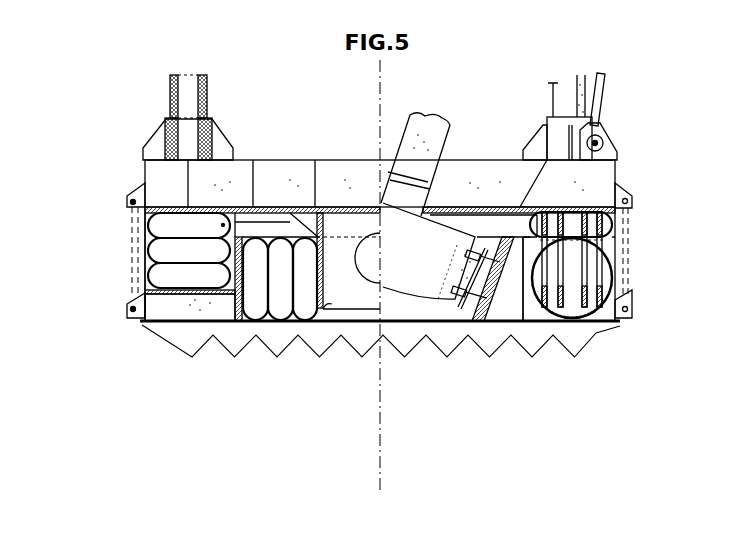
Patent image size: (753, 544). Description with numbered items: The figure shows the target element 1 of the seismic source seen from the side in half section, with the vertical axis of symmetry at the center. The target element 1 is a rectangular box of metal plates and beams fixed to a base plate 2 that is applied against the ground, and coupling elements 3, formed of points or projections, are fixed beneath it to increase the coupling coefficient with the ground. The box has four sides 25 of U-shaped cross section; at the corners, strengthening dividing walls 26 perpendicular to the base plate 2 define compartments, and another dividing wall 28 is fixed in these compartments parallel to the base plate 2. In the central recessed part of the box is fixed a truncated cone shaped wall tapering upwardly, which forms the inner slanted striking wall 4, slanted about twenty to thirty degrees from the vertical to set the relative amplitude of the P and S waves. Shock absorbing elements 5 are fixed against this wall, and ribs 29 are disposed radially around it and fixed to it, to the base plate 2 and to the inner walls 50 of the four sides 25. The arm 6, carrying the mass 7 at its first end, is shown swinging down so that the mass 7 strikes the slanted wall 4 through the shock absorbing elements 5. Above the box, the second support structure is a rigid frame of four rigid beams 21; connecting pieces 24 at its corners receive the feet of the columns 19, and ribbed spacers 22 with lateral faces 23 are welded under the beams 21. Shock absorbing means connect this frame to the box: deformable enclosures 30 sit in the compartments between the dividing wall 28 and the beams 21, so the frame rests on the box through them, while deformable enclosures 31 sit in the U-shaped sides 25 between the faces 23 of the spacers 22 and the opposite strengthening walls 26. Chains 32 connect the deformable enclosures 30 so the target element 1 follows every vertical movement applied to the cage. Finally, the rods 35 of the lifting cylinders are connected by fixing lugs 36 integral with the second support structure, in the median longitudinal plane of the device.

The target element 1 is at (147, 350).
The base plate 2 is at (542, 326).
The coupling elements 3 is at (573, 341).
The inner slanted striking wall 4 is at (480, 314).
The shock absorbing elements 5 is at (462, 302).
The arm 6 is at (413, 122).
The mass 7 is at (419, 265).
The columns 19 is at (170, 90).
The rigid beams 21 is at (145, 175).
The ribbed spacers 22 is at (353, 318).
The lateral faces 23 is at (330, 300).
The connecting pieces 24 is at (160, 130).
The sides 25 is at (175, 312).
The strengthening dividing walls 26 is at (238, 300).
The dividing wall 28 is at (203, 294).
The ribs 29 is at (505, 316).
The deformable enclosures 30 is at (165, 272).
The deformable enclosures 31 is at (283, 308).
The chains 32 is at (135, 282).
The rods 35 is at (605, 97).
The fixing lugs 36 is at (608, 142).
The inner walls 50 is at (512, 323).